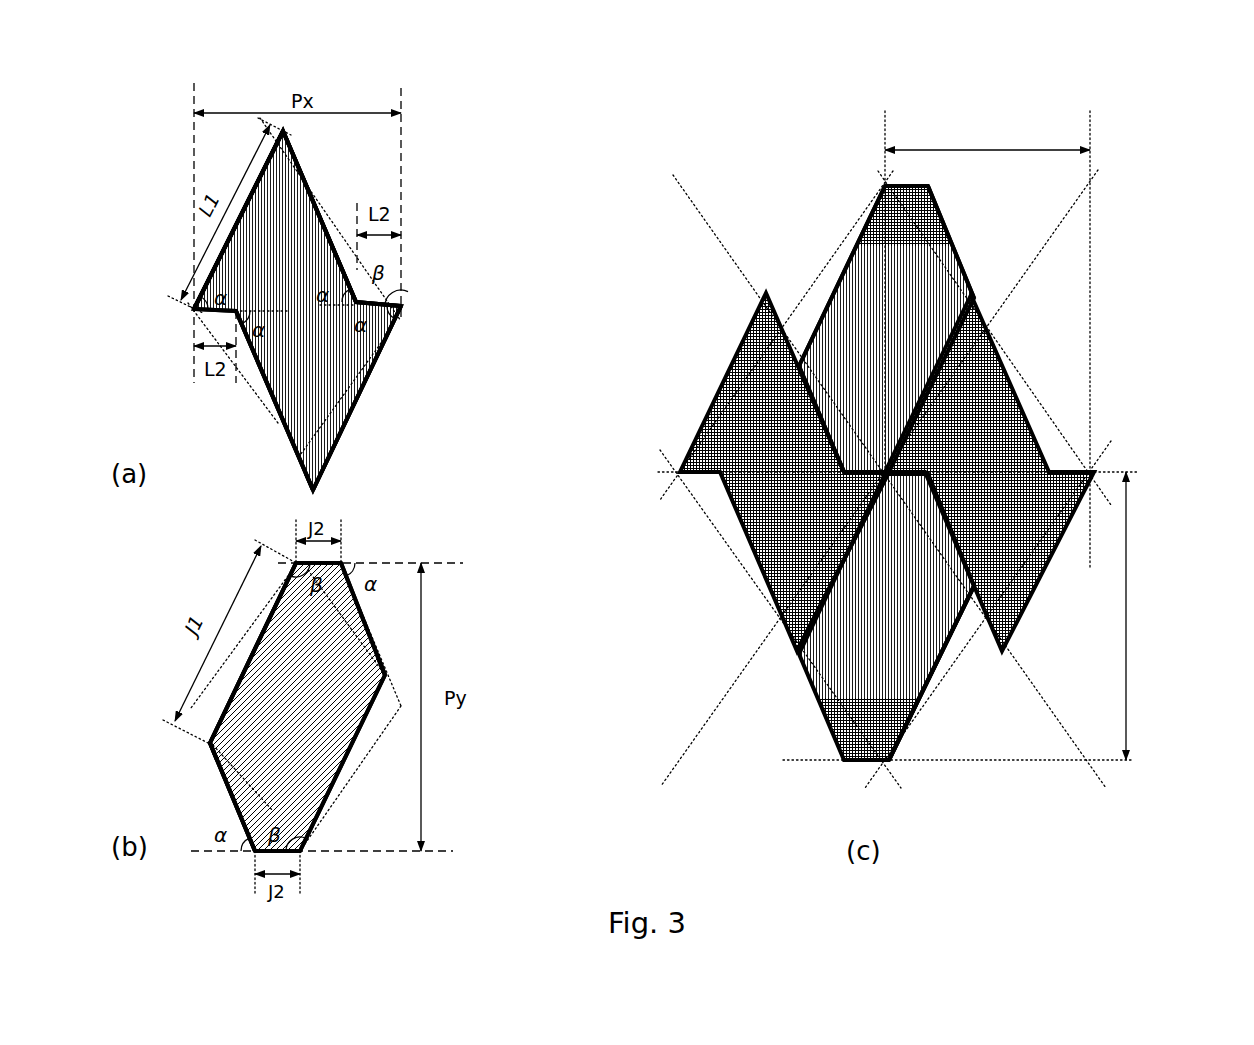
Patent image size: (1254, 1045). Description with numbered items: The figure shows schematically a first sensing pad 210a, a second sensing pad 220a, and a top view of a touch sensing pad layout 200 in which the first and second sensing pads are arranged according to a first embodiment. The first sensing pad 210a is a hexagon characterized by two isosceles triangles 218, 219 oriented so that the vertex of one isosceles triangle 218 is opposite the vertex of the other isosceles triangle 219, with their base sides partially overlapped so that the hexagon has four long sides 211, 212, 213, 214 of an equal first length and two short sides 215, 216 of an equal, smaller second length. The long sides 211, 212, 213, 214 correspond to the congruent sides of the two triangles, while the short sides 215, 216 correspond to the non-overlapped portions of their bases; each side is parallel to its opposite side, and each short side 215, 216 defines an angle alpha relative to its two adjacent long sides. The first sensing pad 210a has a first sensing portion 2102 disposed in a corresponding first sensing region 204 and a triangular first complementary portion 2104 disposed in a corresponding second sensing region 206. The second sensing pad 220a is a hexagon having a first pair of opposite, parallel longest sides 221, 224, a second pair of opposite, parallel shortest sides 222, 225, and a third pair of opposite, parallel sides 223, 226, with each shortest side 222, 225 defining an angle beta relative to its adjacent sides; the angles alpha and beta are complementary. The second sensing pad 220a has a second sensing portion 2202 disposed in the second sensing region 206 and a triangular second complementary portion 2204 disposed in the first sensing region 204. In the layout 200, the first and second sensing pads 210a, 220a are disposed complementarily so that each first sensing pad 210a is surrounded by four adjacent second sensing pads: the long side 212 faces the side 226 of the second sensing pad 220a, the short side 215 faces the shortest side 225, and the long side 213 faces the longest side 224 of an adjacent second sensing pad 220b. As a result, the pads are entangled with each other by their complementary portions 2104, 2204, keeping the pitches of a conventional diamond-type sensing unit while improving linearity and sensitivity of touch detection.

The touch sensing pad layout 200 is at (1135, 275).
The first sensing region 204 is at (265, 412).
The second sensing region 206 is at (213, 657).
The first sensing pad 210a is at (495, 222).
The long side 211 is at (250, 177).
The long side 212 is at (298, 173).
The long side 213 is at (343, 400).
The long side 214 is at (268, 407).
The short side 215 is at (393, 296).
The short side 216 is at (200, 307).
The isosceles triangle 218 is at (265, 270).
The isosceles triangle 219 is at (315, 373).
The first sensing portion 2102 is at (252, 274).
The first complementary portion 2104 is at (265, 155).
The second sensing pad 220a is at (498, 655).
The second sensing pad 220b is at (887, 740).
The longest side 221 is at (268, 593).
The shortest side 222 is at (330, 553).
The side 223 is at (357, 613).
The longest side 224 is at (340, 747).
The shortest side 225 is at (280, 847).
The side 226 is at (222, 787).
The second sensing portion 2202 is at (307, 722).
The second complementary portion 2204 is at (357, 637).